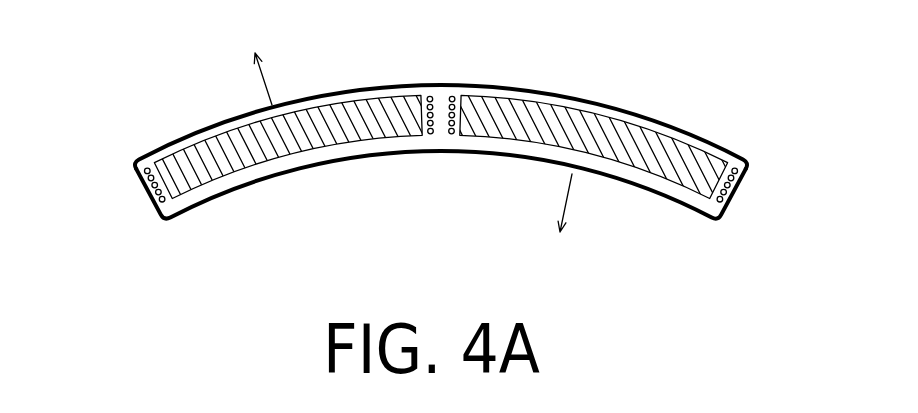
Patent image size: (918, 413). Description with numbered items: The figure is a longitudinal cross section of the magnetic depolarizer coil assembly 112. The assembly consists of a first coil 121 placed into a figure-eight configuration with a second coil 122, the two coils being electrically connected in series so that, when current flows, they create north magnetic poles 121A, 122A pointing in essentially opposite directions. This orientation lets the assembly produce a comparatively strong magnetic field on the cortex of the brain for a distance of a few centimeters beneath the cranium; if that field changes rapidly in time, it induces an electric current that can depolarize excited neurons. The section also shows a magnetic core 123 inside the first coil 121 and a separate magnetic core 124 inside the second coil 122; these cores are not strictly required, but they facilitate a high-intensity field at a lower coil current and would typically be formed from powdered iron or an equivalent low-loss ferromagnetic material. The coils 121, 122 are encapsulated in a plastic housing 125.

The magnetic depolarizer coil assembly 112 is at (445, 153).
The first coil 121 is at (430, 97).
The north magnetic pole of the first coil 121A is at (262, 82).
The second coil 122 is at (447, 138).
The north magnetic pole of the second coil 122A is at (572, 175).
The magnetic core 123 is at (223, 125).
The magnetic core 124 is at (612, 115).
The plastic housing 125 is at (231, 195).